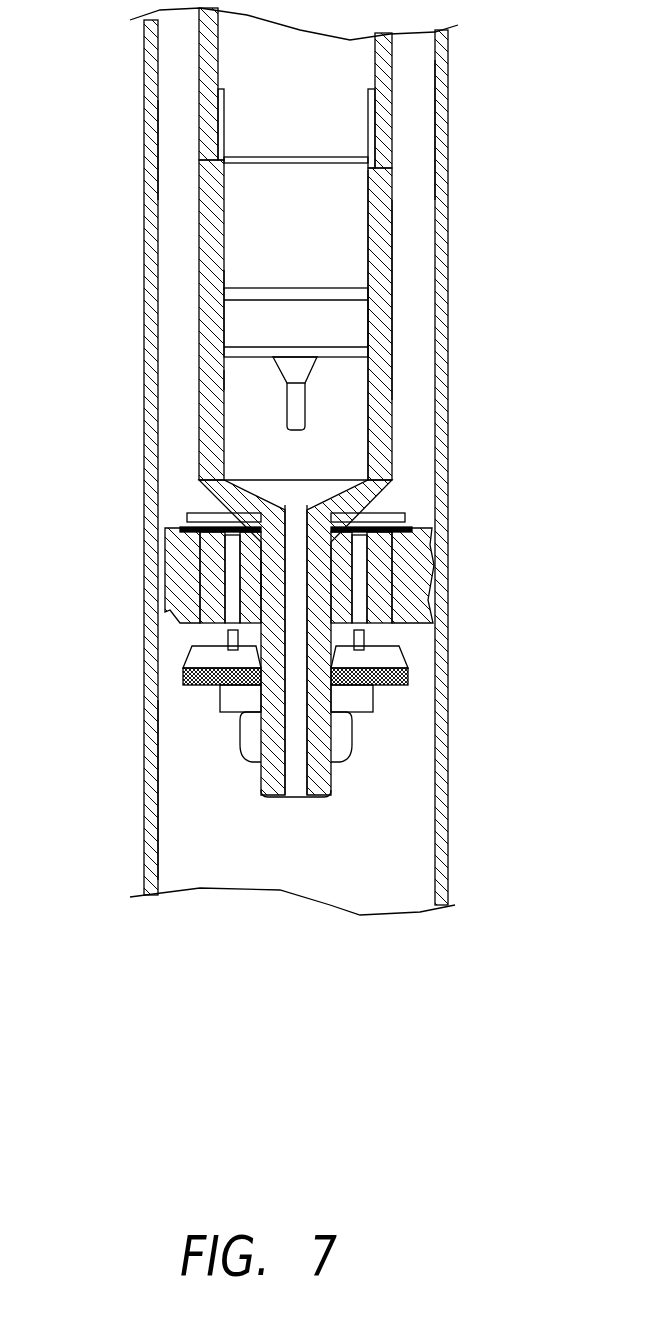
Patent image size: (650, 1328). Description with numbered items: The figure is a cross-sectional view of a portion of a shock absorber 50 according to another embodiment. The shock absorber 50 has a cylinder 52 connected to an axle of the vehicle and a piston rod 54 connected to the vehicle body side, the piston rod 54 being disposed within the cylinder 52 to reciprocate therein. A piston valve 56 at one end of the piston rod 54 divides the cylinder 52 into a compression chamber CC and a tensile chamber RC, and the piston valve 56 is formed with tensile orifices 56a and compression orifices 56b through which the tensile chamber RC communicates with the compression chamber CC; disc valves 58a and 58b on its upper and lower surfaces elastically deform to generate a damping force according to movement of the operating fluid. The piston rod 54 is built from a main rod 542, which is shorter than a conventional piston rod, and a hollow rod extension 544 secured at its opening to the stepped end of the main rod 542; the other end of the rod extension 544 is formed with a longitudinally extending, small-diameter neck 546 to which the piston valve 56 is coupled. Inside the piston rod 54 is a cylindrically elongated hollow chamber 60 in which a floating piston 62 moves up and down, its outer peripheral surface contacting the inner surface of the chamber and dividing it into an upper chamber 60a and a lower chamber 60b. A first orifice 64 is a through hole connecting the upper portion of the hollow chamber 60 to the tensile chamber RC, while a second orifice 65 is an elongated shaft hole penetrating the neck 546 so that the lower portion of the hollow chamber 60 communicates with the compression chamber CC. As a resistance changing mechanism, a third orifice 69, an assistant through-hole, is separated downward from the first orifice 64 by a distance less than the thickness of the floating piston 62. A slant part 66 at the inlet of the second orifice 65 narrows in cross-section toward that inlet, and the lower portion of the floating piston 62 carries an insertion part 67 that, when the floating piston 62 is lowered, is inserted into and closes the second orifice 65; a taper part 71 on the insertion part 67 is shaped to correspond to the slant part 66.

The shock absorber 50 is at (482, 58).
The cylinder 52 is at (446, 112).
The piston rod 54 is at (410, 266).
The piston valve 56 is at (436, 540).
The tensile orifices 56a is at (430, 603).
The compression orifices 56b is at (430, 575).
The disc valve 58a is at (390, 677).
The disc valve 58b is at (398, 512).
The hollow chamber 60 is at (45, 262).
The upper chamber 60a is at (248, 270).
The lower chamber 60b is at (248, 392).
The floating piston 62 is at (356, 320).
The first orifice 64 is at (393, 170).
The second orifice 65 is at (328, 782).
The slant part 66 is at (286, 482).
The insertion part 67 is at (306, 405).
The third orifice 69 is at (370, 225).
The taper part 71 is at (318, 370).
The main rod 542 is at (215, 52).
The rod extension 544 is at (215, 195).
The neck 546 is at (278, 588).
The tensile chamber RC is at (175, 148).
The compression chamber CC is at (190, 803).